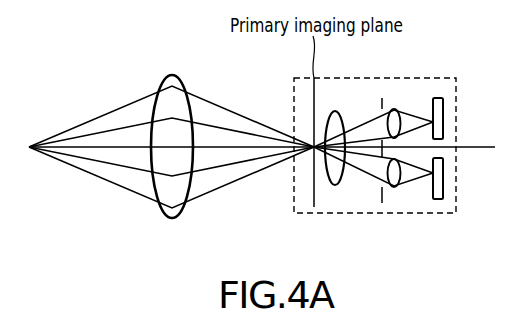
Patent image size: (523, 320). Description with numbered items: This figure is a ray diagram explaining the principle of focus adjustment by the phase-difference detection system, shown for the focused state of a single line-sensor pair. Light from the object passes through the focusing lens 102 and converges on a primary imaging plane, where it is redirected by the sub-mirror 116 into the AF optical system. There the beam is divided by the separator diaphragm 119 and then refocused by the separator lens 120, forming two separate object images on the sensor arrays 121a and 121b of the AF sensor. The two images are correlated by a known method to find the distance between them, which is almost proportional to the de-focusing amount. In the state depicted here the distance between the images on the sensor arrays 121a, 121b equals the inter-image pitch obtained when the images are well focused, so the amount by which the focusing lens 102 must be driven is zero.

The focusing lens 102 is at (172, 218).
The sub-mirror 116 is at (330, 185).
The separator diaphragm 119 is at (382, 204).
The separator lens 120 is at (397, 108).
The sensor array 121a is at (443, 112).
The sensor array 121b is at (443, 176).